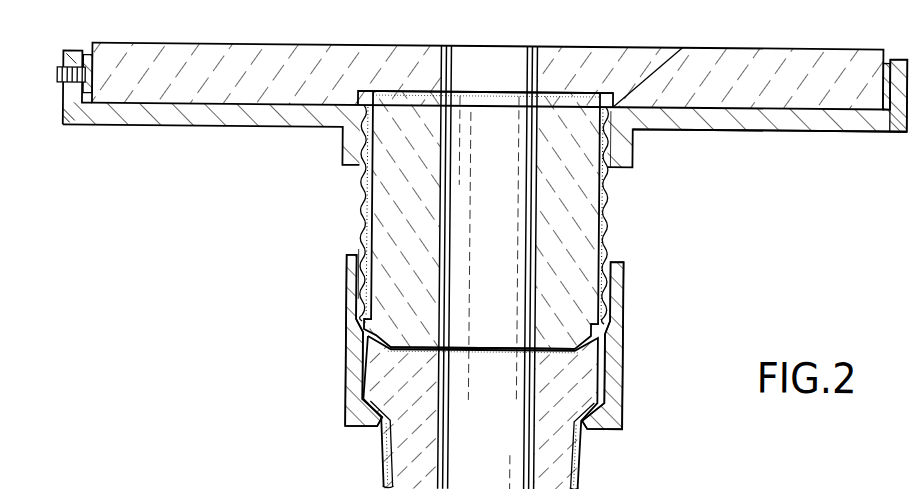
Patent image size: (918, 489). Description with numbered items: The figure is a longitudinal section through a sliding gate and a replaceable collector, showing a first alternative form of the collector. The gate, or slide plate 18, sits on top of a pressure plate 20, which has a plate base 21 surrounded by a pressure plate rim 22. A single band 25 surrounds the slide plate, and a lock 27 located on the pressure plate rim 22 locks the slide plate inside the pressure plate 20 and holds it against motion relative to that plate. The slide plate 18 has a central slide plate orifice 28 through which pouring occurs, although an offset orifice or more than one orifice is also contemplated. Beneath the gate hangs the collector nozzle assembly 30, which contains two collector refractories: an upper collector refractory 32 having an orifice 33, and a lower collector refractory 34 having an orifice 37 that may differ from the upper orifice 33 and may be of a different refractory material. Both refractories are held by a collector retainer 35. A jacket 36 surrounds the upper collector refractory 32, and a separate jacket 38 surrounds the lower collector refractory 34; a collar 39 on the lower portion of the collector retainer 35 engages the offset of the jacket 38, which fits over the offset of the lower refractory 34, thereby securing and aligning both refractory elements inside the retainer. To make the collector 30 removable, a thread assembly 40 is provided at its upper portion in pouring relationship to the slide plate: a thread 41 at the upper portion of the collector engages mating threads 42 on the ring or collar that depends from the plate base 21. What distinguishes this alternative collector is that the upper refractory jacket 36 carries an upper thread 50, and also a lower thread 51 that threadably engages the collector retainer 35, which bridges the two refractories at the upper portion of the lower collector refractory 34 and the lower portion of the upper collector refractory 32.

The slide plate (gate) 18 is at (723, 45).
The pressure plate 20 is at (178, 142).
The plate base 21 is at (237, 124).
The pressure plate rim 22 is at (62, 99).
The band 25 is at (88, 53).
The lock 27 is at (57, 76).
The slide plate orifice 28 is at (474, 77).
The collector nozzle assembly 30 is at (637, 327).
The upper collector refractory 32 is at (582, 219).
The orifice of upper collector refractory 33 is at (496, 218).
The lower collector refractory 34 is at (600, 486).
The collector retainer 35 is at (629, 386).
The upper refractory jacket 36 is at (613, 231).
The orifice of lower collector refractory 37 is at (474, 435).
The lower refractory jacket 38 is at (593, 442).
The collar 39 is at (620, 420).
The thread assembly 40 is at (679, 45).
The thread 41 is at (615, 312).
The mating threads 42 is at (625, 150).
The upper thread 50 is at (362, 143).
The lower thread 51 is at (357, 298).